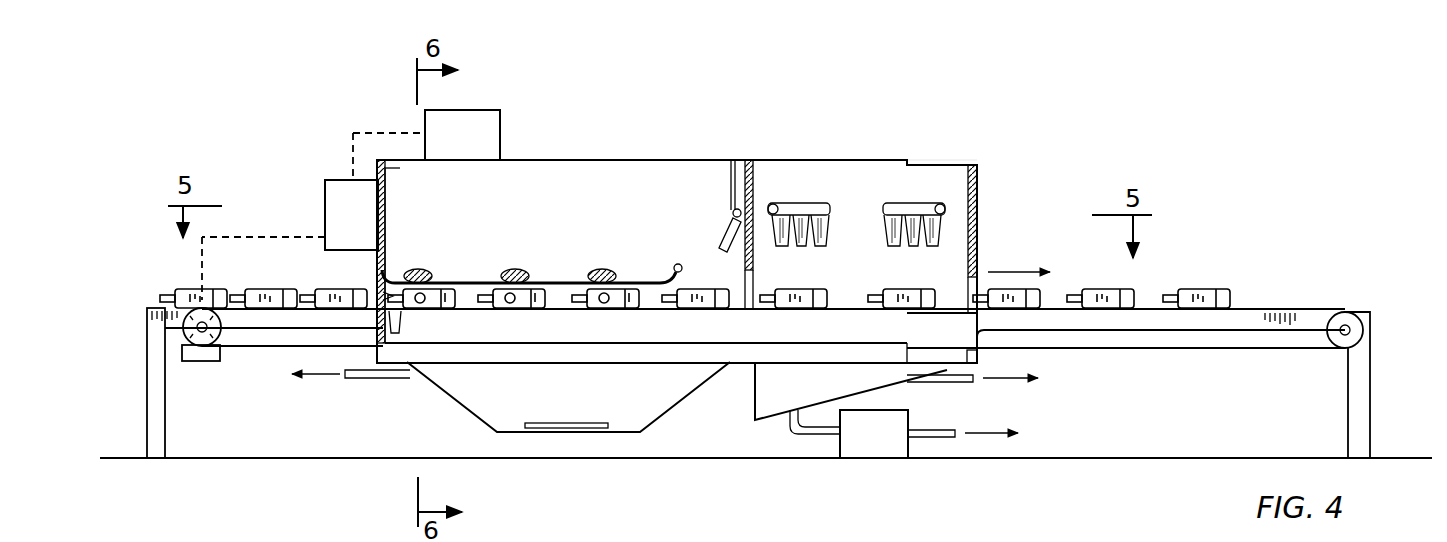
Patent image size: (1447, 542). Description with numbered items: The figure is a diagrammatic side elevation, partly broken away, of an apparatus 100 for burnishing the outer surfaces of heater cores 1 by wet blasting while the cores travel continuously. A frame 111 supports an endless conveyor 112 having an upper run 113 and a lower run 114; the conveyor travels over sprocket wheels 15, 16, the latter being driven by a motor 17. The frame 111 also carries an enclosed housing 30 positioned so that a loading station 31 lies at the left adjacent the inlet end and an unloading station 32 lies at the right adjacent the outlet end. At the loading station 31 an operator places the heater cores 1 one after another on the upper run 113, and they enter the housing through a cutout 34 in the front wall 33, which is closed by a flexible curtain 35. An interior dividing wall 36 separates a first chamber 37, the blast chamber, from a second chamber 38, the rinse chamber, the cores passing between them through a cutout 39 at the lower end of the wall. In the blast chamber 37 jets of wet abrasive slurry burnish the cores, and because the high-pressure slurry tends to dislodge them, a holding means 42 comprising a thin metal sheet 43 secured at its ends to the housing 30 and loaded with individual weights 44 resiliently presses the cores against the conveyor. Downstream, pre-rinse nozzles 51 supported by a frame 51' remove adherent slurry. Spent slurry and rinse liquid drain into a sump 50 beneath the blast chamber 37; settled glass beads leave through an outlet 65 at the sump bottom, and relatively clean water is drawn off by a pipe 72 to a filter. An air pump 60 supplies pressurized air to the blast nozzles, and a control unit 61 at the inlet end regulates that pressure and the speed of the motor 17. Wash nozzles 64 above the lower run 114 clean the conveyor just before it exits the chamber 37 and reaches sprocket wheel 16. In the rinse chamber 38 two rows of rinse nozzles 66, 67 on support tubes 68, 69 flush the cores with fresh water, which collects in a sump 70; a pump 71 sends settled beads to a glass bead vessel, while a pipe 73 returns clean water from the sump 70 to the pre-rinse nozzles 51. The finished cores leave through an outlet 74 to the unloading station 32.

The heater cores 1 is at (183, 289).
The sprocket wheel 15 is at (1337, 350).
The sprocket wheel 16 is at (215, 350).
The motor 17 is at (196, 348).
The housing 30 is at (653, 157).
The inlet or loading station 31 is at (228, 143).
The exit or unloading station 32 is at (1075, 173).
The front wall 33 is at (382, 200).
The cutout 34 is at (386, 232).
The flexible closure curtain 35 is at (383, 292).
The interior dividing wall 36 is at (753, 178).
The first chamber 37 is at (500, 203).
The second chamber 38 is at (875, 191).
The cutout 39 is at (760, 306).
The holding means 42 is at (565, 282).
The thin metal sheet 43 is at (393, 283).
The individual weights 44 is at (432, 274).
The sump 50 is at (687, 388).
The rinse nozzles 51 is at (711, 225).
The frame 51' is at (710, 185).
The air pump 60 is at (496, 132).
The control unit 61 is at (333, 197).
The wash nozzles 64 is at (402, 322).
The outlet 65 is at (562, 430).
The rinse nozzles 66 is at (828, 232).
The rinse nozzles 67 is at (941, 236).
The support tube 68 is at (800, 203).
The support tube 69 is at (905, 203).
The sump 70 is at (775, 407).
The pump 71 is at (888, 450).
The pipe 72 is at (410, 378).
The pipe 73 is at (961, 383).
The outlet 74 is at (976, 272).
The apparatus 100 is at (722, 128).
The frame 111 is at (1362, 380).
The endless conveyor 112 is at (1291, 304).
The upper run 113 is at (1155, 310).
The lower run 114 is at (1292, 340).